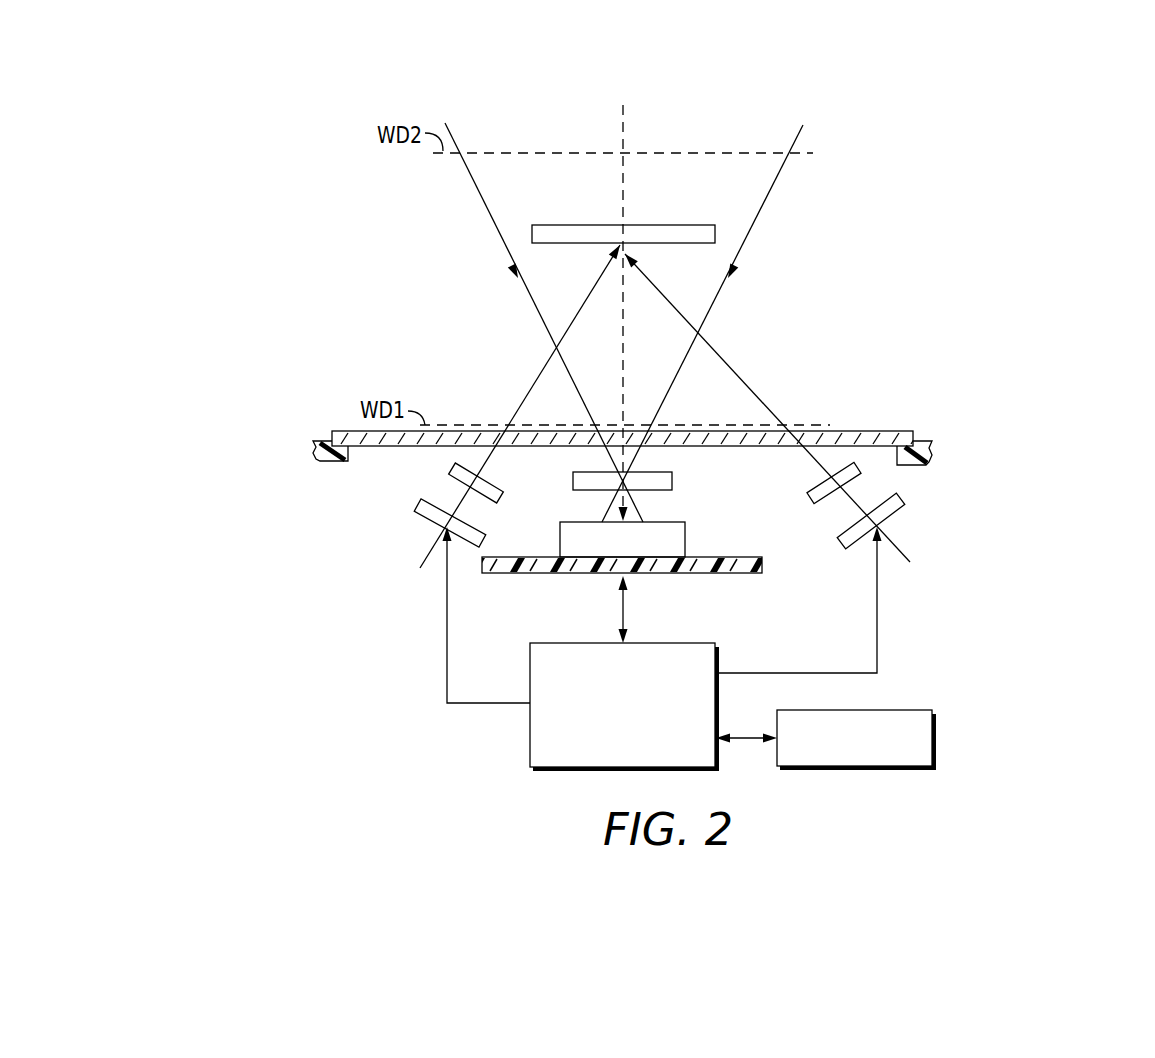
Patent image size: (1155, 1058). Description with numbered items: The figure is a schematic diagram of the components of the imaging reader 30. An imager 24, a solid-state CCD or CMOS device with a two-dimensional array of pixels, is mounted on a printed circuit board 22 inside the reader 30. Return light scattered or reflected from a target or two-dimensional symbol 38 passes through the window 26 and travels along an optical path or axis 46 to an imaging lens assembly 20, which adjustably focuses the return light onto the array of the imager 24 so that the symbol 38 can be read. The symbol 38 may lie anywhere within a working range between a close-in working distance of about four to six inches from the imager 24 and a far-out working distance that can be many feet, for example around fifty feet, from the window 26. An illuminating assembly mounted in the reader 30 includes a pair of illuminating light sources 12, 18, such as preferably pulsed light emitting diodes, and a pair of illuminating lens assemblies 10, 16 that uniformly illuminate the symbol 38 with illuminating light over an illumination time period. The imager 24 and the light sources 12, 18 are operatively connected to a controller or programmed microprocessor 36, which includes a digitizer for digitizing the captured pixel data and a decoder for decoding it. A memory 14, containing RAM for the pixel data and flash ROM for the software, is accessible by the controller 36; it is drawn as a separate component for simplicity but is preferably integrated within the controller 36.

The illuminating lens assembly 10 is at (1019, 437).
The illuminating light source 12 is at (892, 520).
The memory 14 is at (934, 738).
The illuminating lens assembly 16 is at (451, 470).
The illuminating light source 18 is at (427, 518).
The imaging lens assembly 20 is at (673, 480).
The printed circuit board 22 is at (698, 575).
The imager 24 is at (686, 540).
The window 26 is at (346, 431).
The imaging reader 30 is at (760, 331).
The controller 36 is at (530, 668).
The symbol 38 is at (692, 225).
The optical axis 46 is at (623, 131).